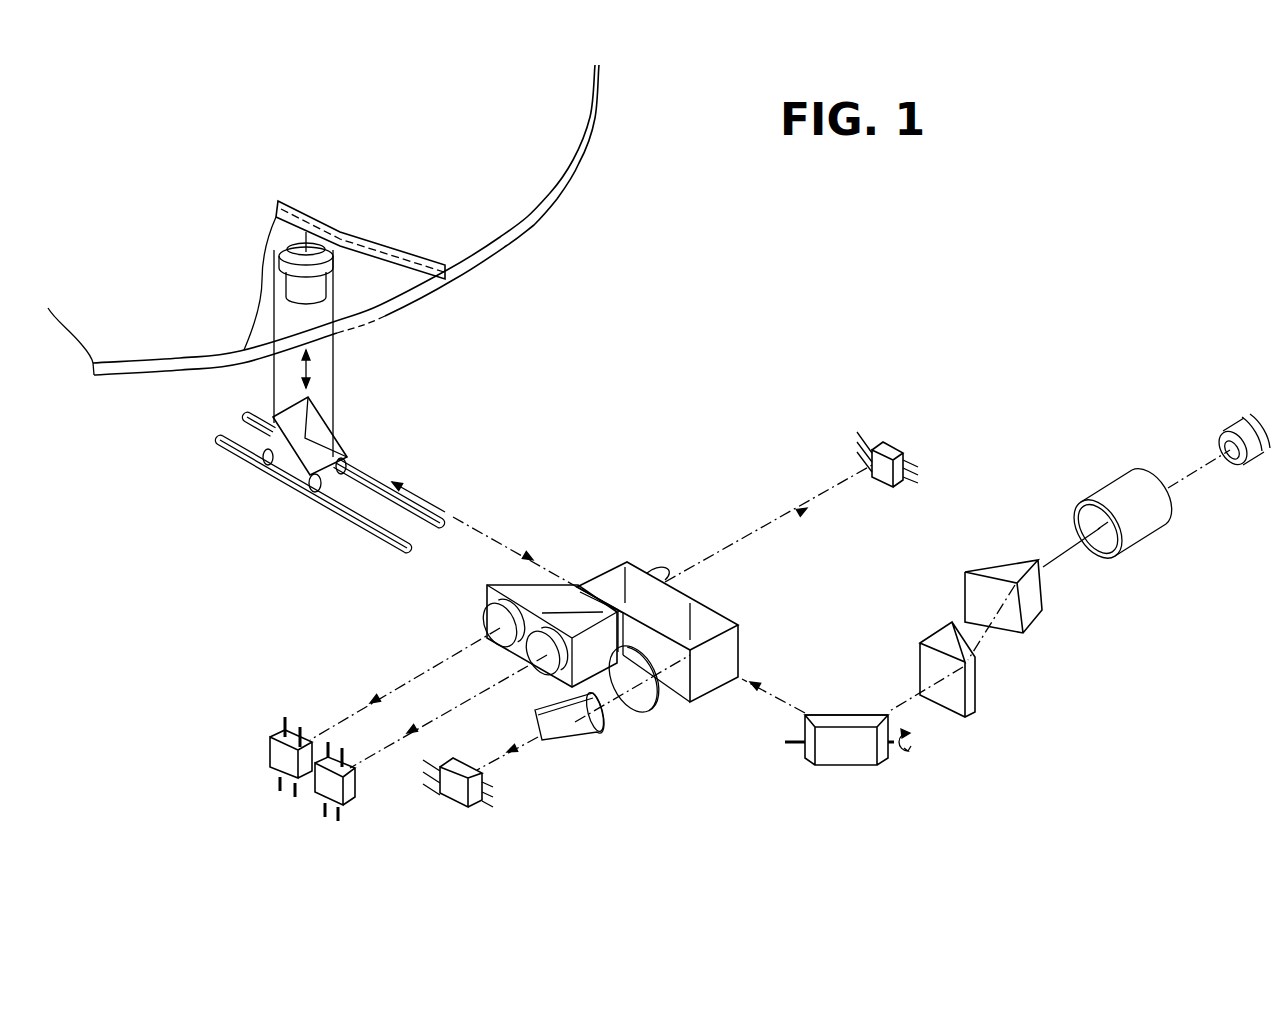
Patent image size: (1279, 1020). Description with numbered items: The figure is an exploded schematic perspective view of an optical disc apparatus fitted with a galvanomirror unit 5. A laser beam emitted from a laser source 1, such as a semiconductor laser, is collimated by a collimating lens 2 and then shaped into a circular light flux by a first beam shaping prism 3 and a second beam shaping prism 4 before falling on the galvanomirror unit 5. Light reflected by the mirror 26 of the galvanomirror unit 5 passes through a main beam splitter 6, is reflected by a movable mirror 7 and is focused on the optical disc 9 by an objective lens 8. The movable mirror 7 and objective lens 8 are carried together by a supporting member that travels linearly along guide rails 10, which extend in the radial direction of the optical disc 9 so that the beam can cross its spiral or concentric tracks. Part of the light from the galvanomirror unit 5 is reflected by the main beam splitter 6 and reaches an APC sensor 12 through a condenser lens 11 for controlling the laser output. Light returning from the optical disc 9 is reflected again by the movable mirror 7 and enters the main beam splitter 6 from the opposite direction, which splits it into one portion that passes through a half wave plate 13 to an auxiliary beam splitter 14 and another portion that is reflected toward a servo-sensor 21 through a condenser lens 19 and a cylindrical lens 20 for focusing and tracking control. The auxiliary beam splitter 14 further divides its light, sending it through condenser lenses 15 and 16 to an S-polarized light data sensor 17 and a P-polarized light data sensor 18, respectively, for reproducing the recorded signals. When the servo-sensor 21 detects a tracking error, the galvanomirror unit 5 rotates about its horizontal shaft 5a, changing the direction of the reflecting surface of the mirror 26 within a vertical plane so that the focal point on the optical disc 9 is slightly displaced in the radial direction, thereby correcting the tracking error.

The laser source 1 is at (1228, 418).
The collimating lens 2 is at (1150, 545).
The first beam shaping prism 3 is at (1032, 613).
The second beam shaping prism 4 is at (975, 682).
The galvanomirror unit 5 is at (845, 758).
The horizontal shaft 5a is at (785, 746).
The mirror 26 is at (852, 713).
The main beam splitter 6 is at (713, 612).
The movable mirror 7 is at (336, 442).
The objective lens 8 is at (313, 292).
The optical disc 9 is at (510, 205).
The guide rails 10 is at (357, 523).
The condenser lens 11 is at (661, 573).
The APC sensor 12 is at (887, 443).
The 1/2 wave plate 13 is at (588, 584).
The auxiliary beam splitter 14 is at (484, 588).
The condenser lens 15 is at (486, 645).
The condenser lens 16 is at (541, 673).
The S-polarized light data sensor 17 is at (270, 760).
The P-polarized light data sensor 18 is at (327, 785).
The condenser lens 19 is at (642, 702).
The cylindrical lens 20 is at (573, 724).
The servo-sensor 21 is at (452, 787).